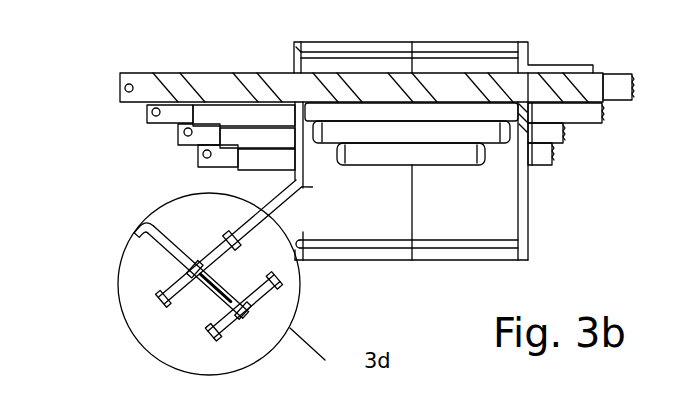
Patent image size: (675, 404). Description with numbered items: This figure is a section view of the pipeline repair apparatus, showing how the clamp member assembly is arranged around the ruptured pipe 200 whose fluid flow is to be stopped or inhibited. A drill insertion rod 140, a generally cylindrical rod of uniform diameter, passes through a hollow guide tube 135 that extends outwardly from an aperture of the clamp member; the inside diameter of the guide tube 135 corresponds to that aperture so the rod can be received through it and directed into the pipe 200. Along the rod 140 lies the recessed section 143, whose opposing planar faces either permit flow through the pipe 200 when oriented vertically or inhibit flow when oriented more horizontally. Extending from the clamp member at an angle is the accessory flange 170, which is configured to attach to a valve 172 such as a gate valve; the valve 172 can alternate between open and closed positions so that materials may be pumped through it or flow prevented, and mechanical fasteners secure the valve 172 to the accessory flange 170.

The drill insertion rod 140 is at (142, 72).
The hollow guide tube 135 is at (555, 118).
The recessed section 143 is at (485, 110).
The pipe 200 is at (529, 252).
The accessory flange 170 is at (257, 222).
The valve 172 is at (134, 293).